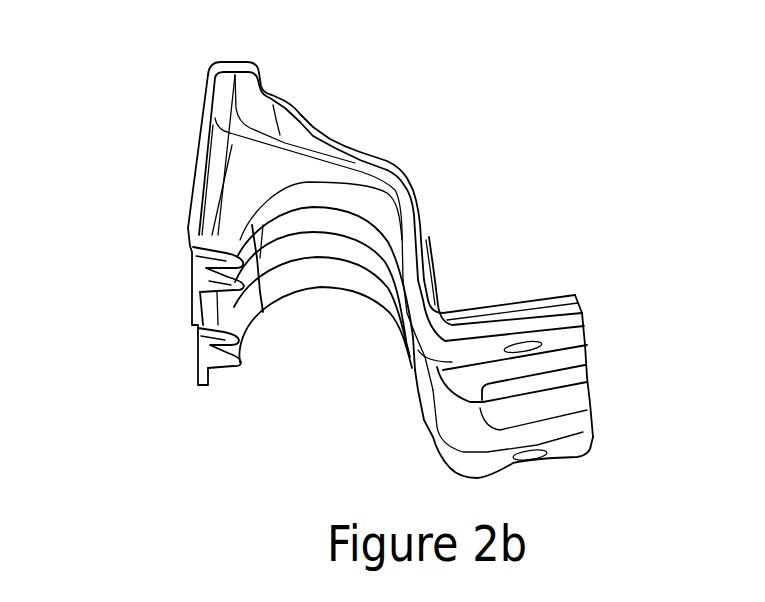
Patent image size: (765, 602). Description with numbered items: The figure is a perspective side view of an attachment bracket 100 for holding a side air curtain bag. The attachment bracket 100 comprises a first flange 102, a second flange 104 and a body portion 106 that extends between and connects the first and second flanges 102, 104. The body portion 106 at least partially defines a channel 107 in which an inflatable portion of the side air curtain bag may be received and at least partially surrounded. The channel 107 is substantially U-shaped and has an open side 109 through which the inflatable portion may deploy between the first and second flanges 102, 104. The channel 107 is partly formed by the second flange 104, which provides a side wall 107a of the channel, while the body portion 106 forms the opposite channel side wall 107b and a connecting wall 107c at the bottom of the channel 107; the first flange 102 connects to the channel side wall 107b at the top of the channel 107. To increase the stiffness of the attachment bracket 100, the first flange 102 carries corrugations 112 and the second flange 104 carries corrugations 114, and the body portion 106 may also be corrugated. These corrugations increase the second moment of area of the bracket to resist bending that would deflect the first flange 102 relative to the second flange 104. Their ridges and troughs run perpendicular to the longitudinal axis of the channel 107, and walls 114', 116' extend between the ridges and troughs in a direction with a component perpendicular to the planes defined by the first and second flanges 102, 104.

The attachment bracket 100 is at (441, 111).
The first flange 102 is at (572, 442).
The second flange 104 is at (197, 150).
The body portion 106 is at (408, 179).
The channel 107 is at (358, 347).
The side wall 107a is at (205, 102).
The channel side wall 107b is at (434, 291).
The connecting wall 107c is at (360, 154).
The open side 109 is at (301, 391).
The corrugations 112 is at (540, 300).
The corrugations 114 is at (155, 298).
The walls 114' is at (185, 244).
The walls 116' is at (321, 144).